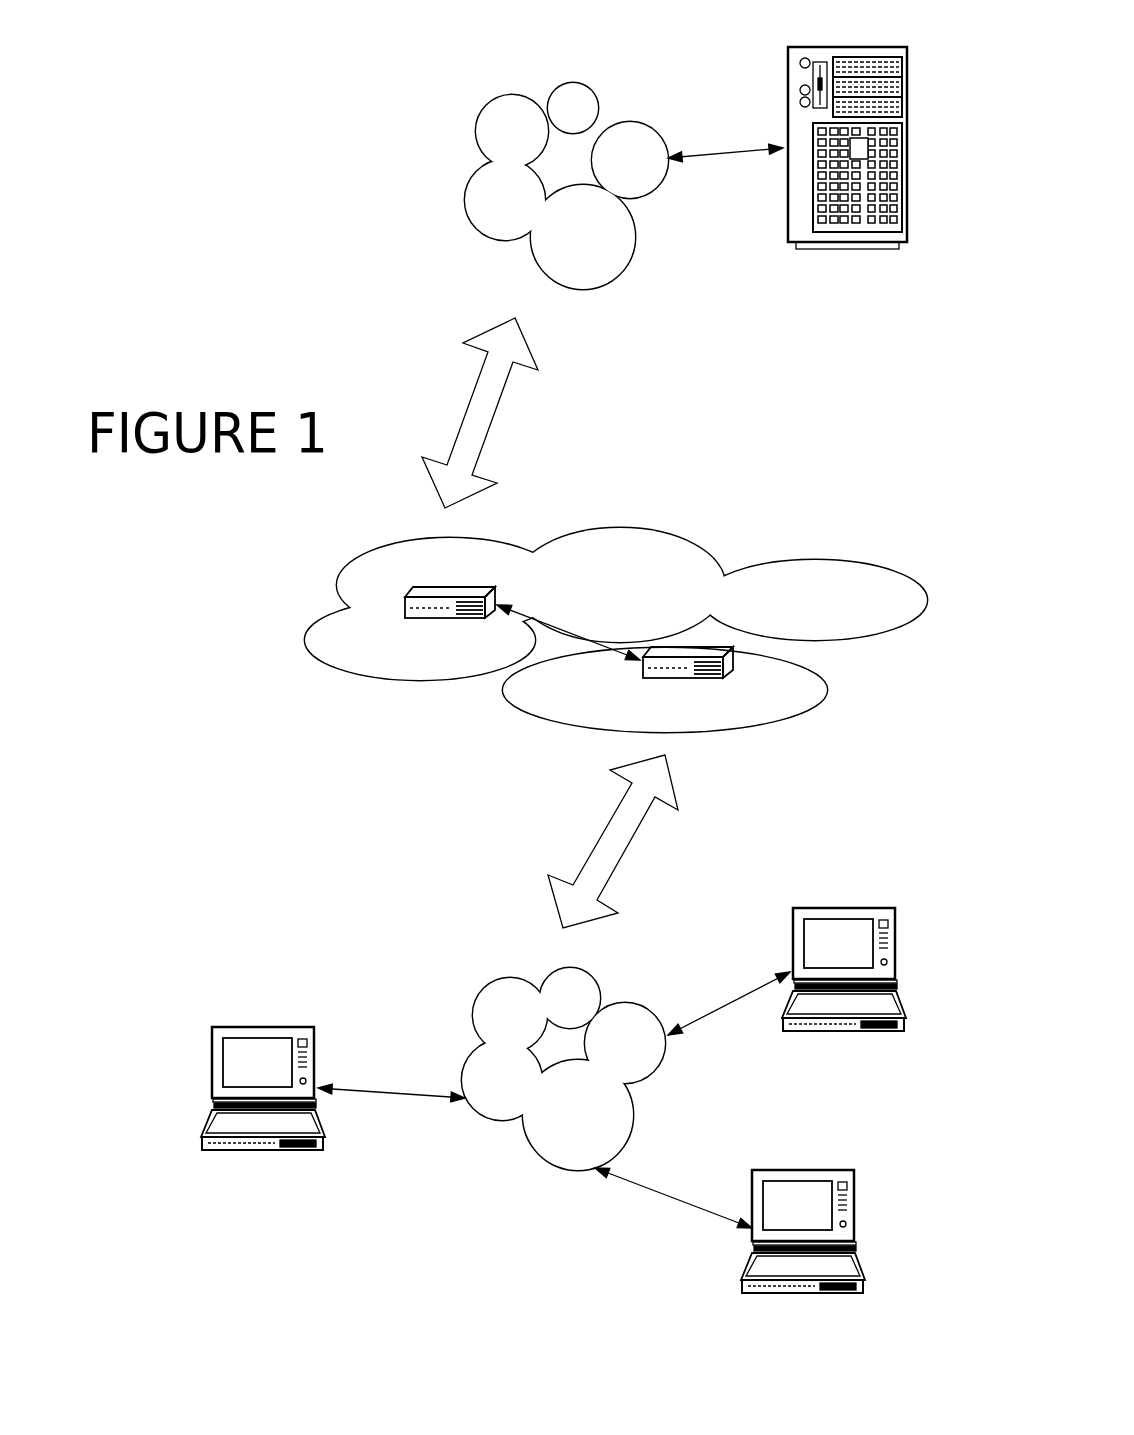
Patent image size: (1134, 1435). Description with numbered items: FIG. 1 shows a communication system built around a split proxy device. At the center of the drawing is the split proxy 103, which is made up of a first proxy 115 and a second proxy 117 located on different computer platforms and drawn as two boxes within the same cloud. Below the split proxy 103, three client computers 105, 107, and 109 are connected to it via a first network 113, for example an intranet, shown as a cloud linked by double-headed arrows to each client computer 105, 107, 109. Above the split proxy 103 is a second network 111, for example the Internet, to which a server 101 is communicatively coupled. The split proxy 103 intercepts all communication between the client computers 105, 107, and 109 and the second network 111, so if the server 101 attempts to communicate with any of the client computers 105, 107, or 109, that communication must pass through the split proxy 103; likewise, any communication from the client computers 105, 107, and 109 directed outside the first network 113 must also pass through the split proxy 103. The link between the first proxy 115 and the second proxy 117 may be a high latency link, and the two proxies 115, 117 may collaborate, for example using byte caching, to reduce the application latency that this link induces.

The server 101 is at (845, 48).
The split proxy 103 is at (373, 543).
The client computer 105 is at (262, 1007).
The client computer 107 is at (843, 908).
The client computer 109 is at (803, 1168).
The second network 111 is at (457, 207).
The first network 113 is at (487, 985).
The first proxy 115 is at (367, 598).
The second proxy 117 is at (800, 647).